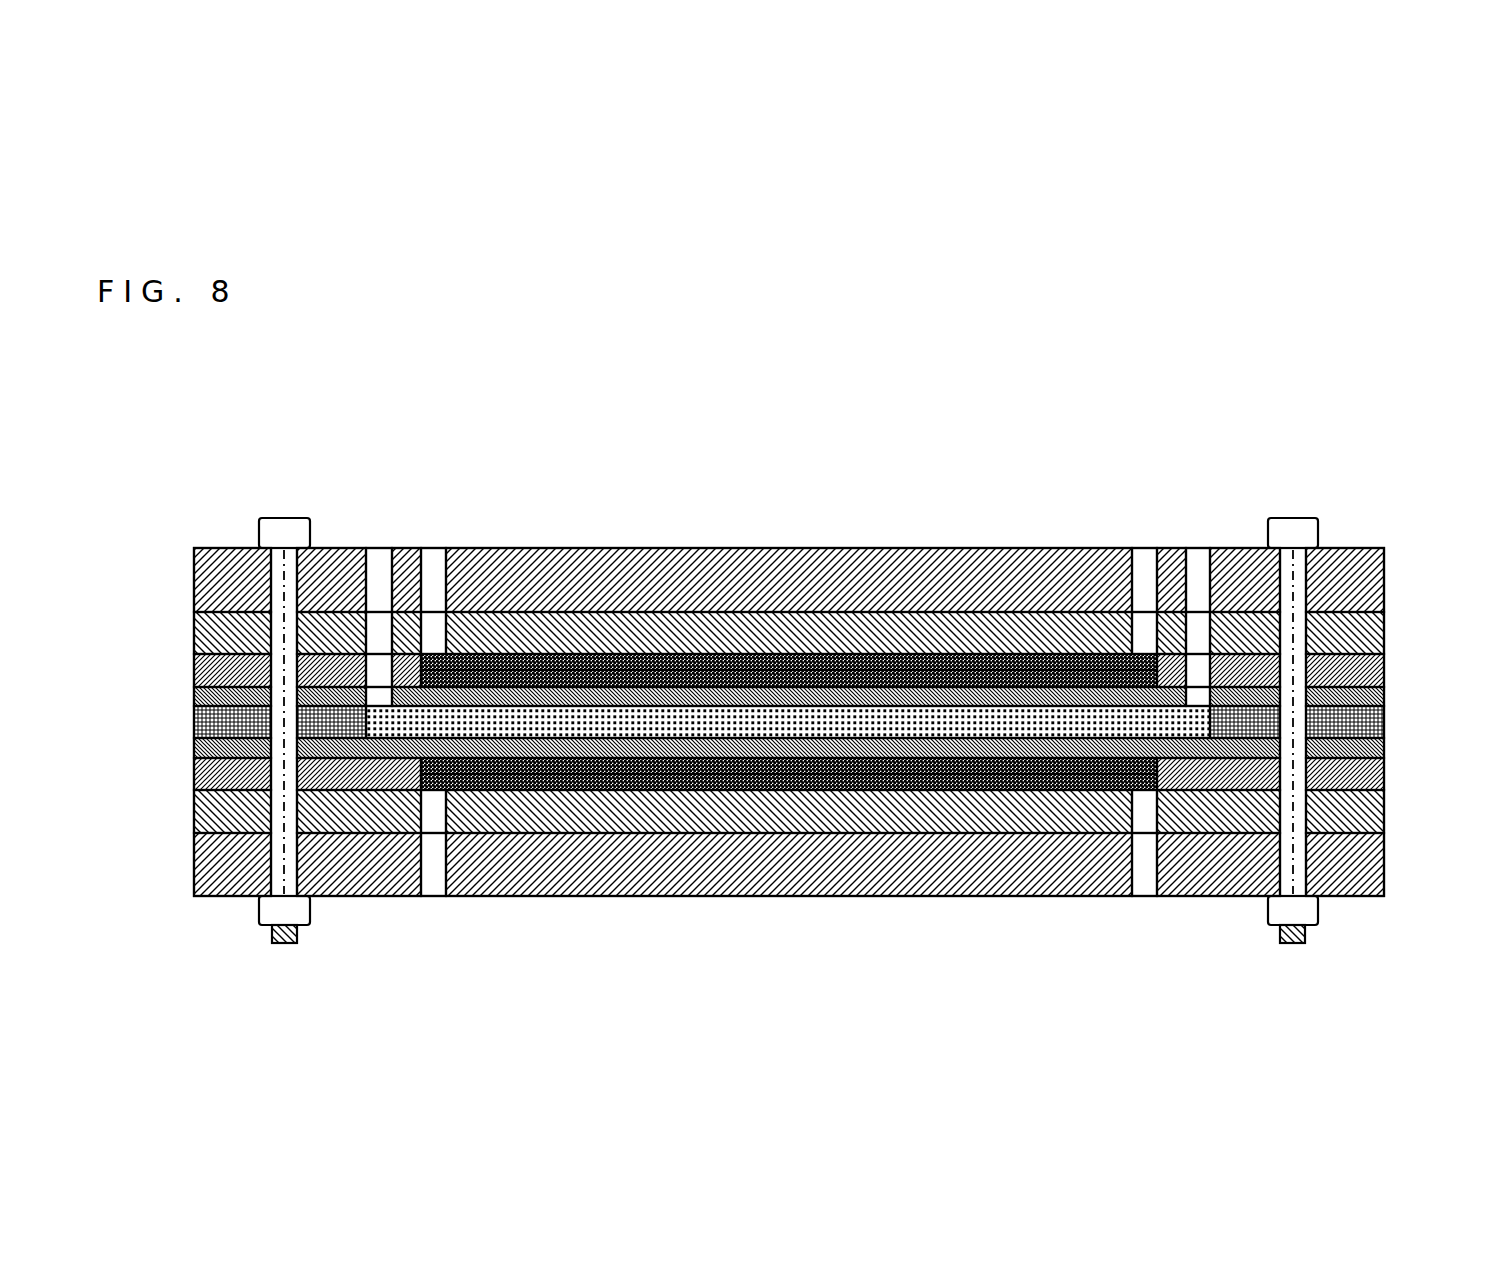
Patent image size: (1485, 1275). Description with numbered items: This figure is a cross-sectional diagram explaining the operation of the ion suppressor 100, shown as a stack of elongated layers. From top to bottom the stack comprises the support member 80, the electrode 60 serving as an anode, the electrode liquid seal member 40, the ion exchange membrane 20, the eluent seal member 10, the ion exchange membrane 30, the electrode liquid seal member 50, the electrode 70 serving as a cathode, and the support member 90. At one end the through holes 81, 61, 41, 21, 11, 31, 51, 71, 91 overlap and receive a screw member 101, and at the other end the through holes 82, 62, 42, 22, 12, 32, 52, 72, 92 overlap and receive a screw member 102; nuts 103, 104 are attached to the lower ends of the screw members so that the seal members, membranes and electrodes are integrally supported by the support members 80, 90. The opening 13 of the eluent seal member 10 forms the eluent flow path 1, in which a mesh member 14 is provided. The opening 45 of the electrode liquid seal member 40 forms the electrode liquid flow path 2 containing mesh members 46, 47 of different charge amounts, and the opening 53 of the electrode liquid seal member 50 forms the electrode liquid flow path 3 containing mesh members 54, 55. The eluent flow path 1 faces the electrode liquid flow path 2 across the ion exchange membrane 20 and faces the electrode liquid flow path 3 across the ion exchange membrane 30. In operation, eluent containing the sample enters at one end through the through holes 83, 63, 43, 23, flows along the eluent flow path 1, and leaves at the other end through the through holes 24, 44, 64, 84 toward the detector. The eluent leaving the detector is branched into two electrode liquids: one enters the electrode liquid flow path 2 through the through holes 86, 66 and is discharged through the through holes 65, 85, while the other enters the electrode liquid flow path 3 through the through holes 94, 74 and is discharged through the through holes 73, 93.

The eluent flow path 1 is at (838, 721).
The electrode liquid flow path 2 is at (815, 674).
The electrode liquid flow path 3 is at (897, 772).
The eluent seal member 10 is at (350, 725).
The through hole 11 is at (275, 723).
The through hole 12 is at (1313, 723).
The opening 13 is at (724, 716).
The mesh member 14 is at (750, 718).
The ion exchange membrane 20 is at (992, 698).
The through hole 21 is at (275, 696).
The through hole 22 is at (1313, 696).
The through hole 23 is at (377, 697).
The through hole 24 is at (1200, 697).
The ion exchange membrane 30 is at (617, 749).
The through hole 31 is at (275, 748).
The through hole 32 is at (1313, 748).
The electrode liquid seal member 40 is at (1255, 672).
The through hole 41 is at (275, 671).
The through hole 42 is at (1313, 671).
The through hole 43 is at (377, 677).
The through hole 44 is at (1200, 677).
The opening 45 is at (572, 665).
The mesh member 46 is at (592, 660).
The mesh member 47 is at (628, 680).
The electrode liquid seal member 50 is at (402, 775).
The through hole 51 is at (275, 774).
The through hole 52 is at (1313, 774).
The opening 53 is at (977, 790).
The mesh member 54 is at (1048, 782).
The mesh member 55 is at (1008, 767).
The electrode 60 is at (943, 628).
The through hole 61 is at (275, 634).
The through hole 62 is at (1313, 634).
The through hole 63 is at (371, 627).
The through hole 64 is at (1206, 625).
The through hole 65 is at (440, 630).
The through hole 66 is at (1139, 628).
The electrode 70 is at (672, 812).
The through hole 71 is at (275, 813).
The through hole 72 is at (1313, 813).
The through hole 73 is at (438, 815).
The through hole 74 is at (1139, 815).
The support member 80 is at (891, 582).
The through hole 81 is at (275, 581).
The through hole 82 is at (1313, 581).
The through hole 83 is at (385, 570).
The through hole 84 is at (1193, 569).
The through hole 85 is at (440, 578).
The through hole 86 is at (1139, 578).
The support member 90 is at (735, 865).
The through hole 91 is at (275, 866).
The through hole 92 is at (1313, 866).
The through hole 93 is at (438, 867).
The through hole 94 is at (1139, 867).
The ion suppressor 100 is at (1420, 472).
The screw member 101 is at (268, 518).
The screw member 102 is at (1310, 518).
The nut 103 is at (258, 912).
The nut 104 is at (1318, 912).